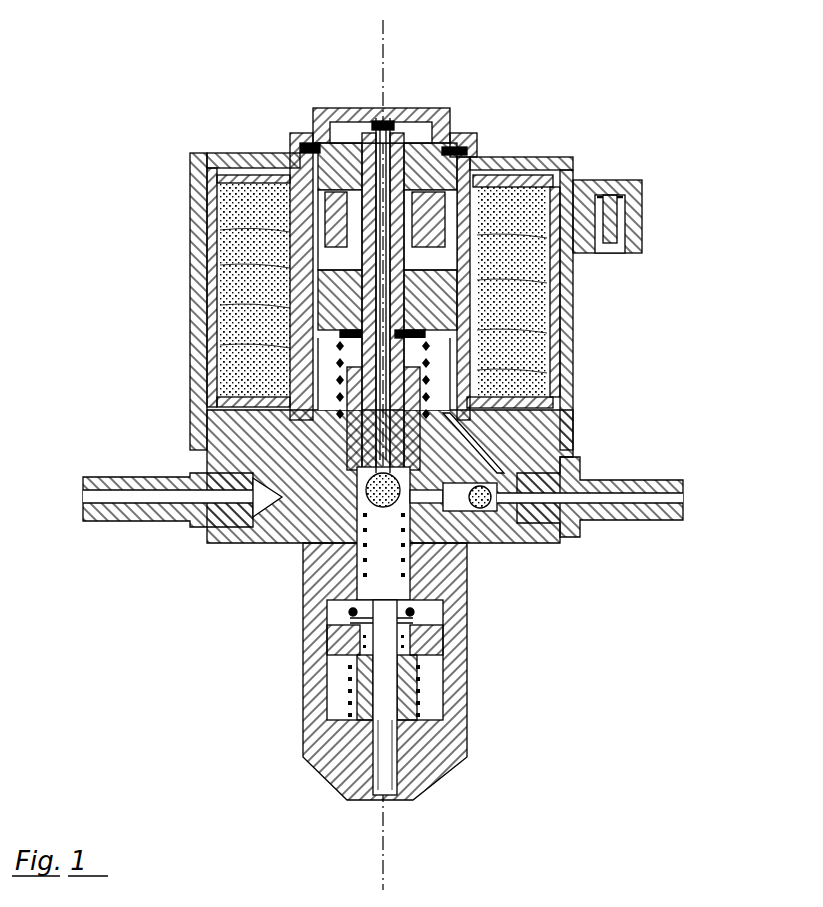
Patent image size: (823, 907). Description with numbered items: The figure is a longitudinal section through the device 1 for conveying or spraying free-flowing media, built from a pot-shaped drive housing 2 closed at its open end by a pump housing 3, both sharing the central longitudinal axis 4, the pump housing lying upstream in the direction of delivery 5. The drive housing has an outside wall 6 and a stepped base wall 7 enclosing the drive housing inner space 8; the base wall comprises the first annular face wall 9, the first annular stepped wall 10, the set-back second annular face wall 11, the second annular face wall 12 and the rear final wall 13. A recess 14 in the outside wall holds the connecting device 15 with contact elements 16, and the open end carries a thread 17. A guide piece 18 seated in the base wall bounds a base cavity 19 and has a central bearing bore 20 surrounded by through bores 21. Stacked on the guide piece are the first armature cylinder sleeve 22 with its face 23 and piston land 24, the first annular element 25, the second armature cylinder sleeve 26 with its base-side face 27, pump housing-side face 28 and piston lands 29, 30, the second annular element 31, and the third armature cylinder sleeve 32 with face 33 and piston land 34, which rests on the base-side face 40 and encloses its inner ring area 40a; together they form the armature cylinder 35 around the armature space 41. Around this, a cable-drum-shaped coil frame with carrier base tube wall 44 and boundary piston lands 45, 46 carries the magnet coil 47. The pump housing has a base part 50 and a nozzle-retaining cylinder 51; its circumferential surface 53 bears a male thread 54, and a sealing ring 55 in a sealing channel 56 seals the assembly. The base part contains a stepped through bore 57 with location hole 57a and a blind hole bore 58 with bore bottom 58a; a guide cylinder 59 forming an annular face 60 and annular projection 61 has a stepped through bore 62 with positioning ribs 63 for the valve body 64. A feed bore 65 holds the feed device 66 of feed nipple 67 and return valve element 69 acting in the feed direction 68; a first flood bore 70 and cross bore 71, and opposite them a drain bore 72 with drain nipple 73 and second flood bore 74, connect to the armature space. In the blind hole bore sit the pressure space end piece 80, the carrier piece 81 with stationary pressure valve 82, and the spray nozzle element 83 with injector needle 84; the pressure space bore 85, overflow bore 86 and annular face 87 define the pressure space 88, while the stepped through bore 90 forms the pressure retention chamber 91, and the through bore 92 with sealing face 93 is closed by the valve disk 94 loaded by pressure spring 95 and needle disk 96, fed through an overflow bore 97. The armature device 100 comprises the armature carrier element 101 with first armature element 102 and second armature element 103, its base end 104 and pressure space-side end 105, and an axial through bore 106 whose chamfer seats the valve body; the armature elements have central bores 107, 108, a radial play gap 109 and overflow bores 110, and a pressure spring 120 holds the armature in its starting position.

The device 1 is at (566, 106).
The drive housing 2 is at (218, 192).
The pump housing 3 is at (470, 612).
The central longitudinal axis 4 is at (383, 42).
The direction of delivery 5 is at (63, 660).
The outside wall 6 is at (585, 323).
The base wall 7 is at (252, 150).
The drive housing inner space 8 is at (573, 280).
The first annular face wall 9 is at (497, 157).
The first annular stepped wall 10 is at (490, 140).
The second annular face wall 11 is at (480, 160).
The second annular face wall 12 is at (472, 150).
The rear final wall 13 is at (440, 140).
The recess 14 is at (567, 178).
The connecting device 15 is at (642, 181).
The contact elements 16 is at (645, 235).
The thread 17 is at (500, 440).
The guide piece 18 is at (308, 150).
The base cavity 19 is at (353, 108).
The bearing bore 20 is at (468, 135).
The through bores 21 is at (480, 155).
The first armature cylinder sleeve 22 is at (575, 170).
The face 23 is at (640, 253).
The piston land 24 is at (640, 230).
The first annular element 25 is at (200, 235).
The second armature cylinder sleeve 26 is at (200, 280).
The base-side face 27 is at (215, 247).
The pump housing-side face 28 is at (220, 312).
The piston land 29 is at (230, 245).
The piston land 30 is at (200, 288).
The second annular element 31 is at (200, 330).
The third armature cylinder sleeve 32 is at (200, 352).
The face 33 is at (200, 337).
The piston land 34 is at (453, 340).
The armature cylinder 35 is at (490, 170).
The base-side face 40 is at (200, 363).
The inner ring area 40a is at (200, 420).
The armature space 41 is at (233, 207).
The carrier base tube wall 44 is at (300, 148).
The boundary piston land 45 is at (250, 160).
The boundary piston land 46 is at (200, 383).
The magnet coil 47 is at (200, 175).
The base part 50 is at (572, 547).
The nozzle-retaining cylinder 51 is at (470, 672).
The circumferential surface 53 is at (560, 545).
The male thread 54 is at (577, 445).
The sealing ring 55 is at (297, 133).
The sealing channel 56 is at (485, 167).
The stepped through bore 57 is at (295, 565).
The location hole 57a is at (282, 548).
The blind hole bore 58 is at (300, 627).
The bore bottom 58a is at (470, 585).
The guide cylinder 59 is at (200, 435).
The annular face 60 is at (580, 430).
The annular projection 61 is at (480, 402).
The stepped through bore 62 is at (205, 463).
The positioning ribs 63 is at (300, 582).
The valve body 64 is at (470, 550).
The feed bore 65 is at (610, 480).
The feed device 66 is at (698, 464).
The feed nipple 67 is at (587, 475).
The feed direction 68 is at (704, 498).
The return valve element 69 is at (530, 550).
The first flood bore 70 is at (488, 448).
The cross bore 71 is at (652, 515).
The drain bore 72 is at (245, 543).
The drain nipple 73 is at (127, 517).
The second flood bore 74 is at (190, 470).
The pressure space end piece 80 is at (300, 623).
The carrier piece 81 is at (300, 657).
The stationary pressure valve 82 is at (470, 632).
The spray nozzle element 83 is at (323, 770).
The injector needle 84 is at (470, 742).
The pressure space bore 85 is at (470, 607).
The overflow bore 86 is at (473, 630).
The annular face 87 is at (367, 587).
The pressure space 88 is at (300, 560).
The stepped through bore 90 is at (303, 673).
The pressure retention chamber 91 is at (390, 640).
The through bore 92 is at (400, 768).
The sealing face 93 is at (413, 797).
The valve disk 94 is at (376, 800).
The pressure spring 95 is at (470, 703).
The needle disk 96 is at (493, 685).
The overflow bore 97 is at (470, 721).
The armature device 100 is at (402, 252).
The armature carrier element 101 is at (412, 353).
The first armature element 102 is at (480, 213).
The second armature element 103 is at (450, 300).
The base end 104 is at (425, 130).
The pressure space-side end 105 is at (428, 466).
The axial through bore 106 is at (390, 118).
The central bore 107 is at (328, 252).
The central bore 108 is at (290, 366).
The radial play gap 109 is at (450, 255).
The overflow bore 110 is at (450, 321).
The pressure spring 120 is at (290, 390).